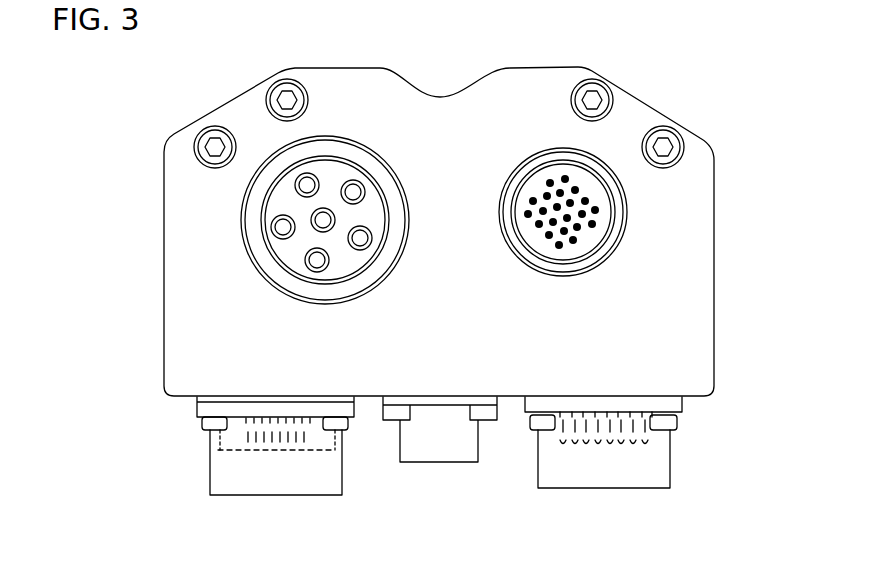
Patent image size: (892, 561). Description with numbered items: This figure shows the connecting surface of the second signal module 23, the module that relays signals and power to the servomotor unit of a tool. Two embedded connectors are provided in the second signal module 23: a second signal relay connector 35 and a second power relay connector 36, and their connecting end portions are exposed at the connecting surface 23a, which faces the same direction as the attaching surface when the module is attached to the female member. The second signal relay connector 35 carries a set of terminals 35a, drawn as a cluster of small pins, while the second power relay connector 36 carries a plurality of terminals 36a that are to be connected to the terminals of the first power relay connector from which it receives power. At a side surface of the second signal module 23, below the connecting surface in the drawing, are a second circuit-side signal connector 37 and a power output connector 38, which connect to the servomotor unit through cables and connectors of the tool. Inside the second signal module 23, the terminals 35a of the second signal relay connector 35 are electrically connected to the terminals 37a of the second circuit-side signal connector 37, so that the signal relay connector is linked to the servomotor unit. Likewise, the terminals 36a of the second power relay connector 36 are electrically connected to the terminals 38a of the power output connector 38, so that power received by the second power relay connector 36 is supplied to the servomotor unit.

The second signal module 23 is at (714, 202).
The connecting surface 23a is at (698, 273).
The second signal relay connector 35 is at (597, 267).
The terminals of the second signal relay connector 35a is at (537, 226).
The second power relay connector 36 is at (380, 280).
The terminals of the second power relay connector 36a is at (305, 267).
The second circuit-side signal connector 37 is at (670, 483).
The terminals of the second circuit-side signal connector 37a is at (587, 458).
The power output connector 38 is at (342, 480).
The terminals of the power output connector 38a is at (272, 465).